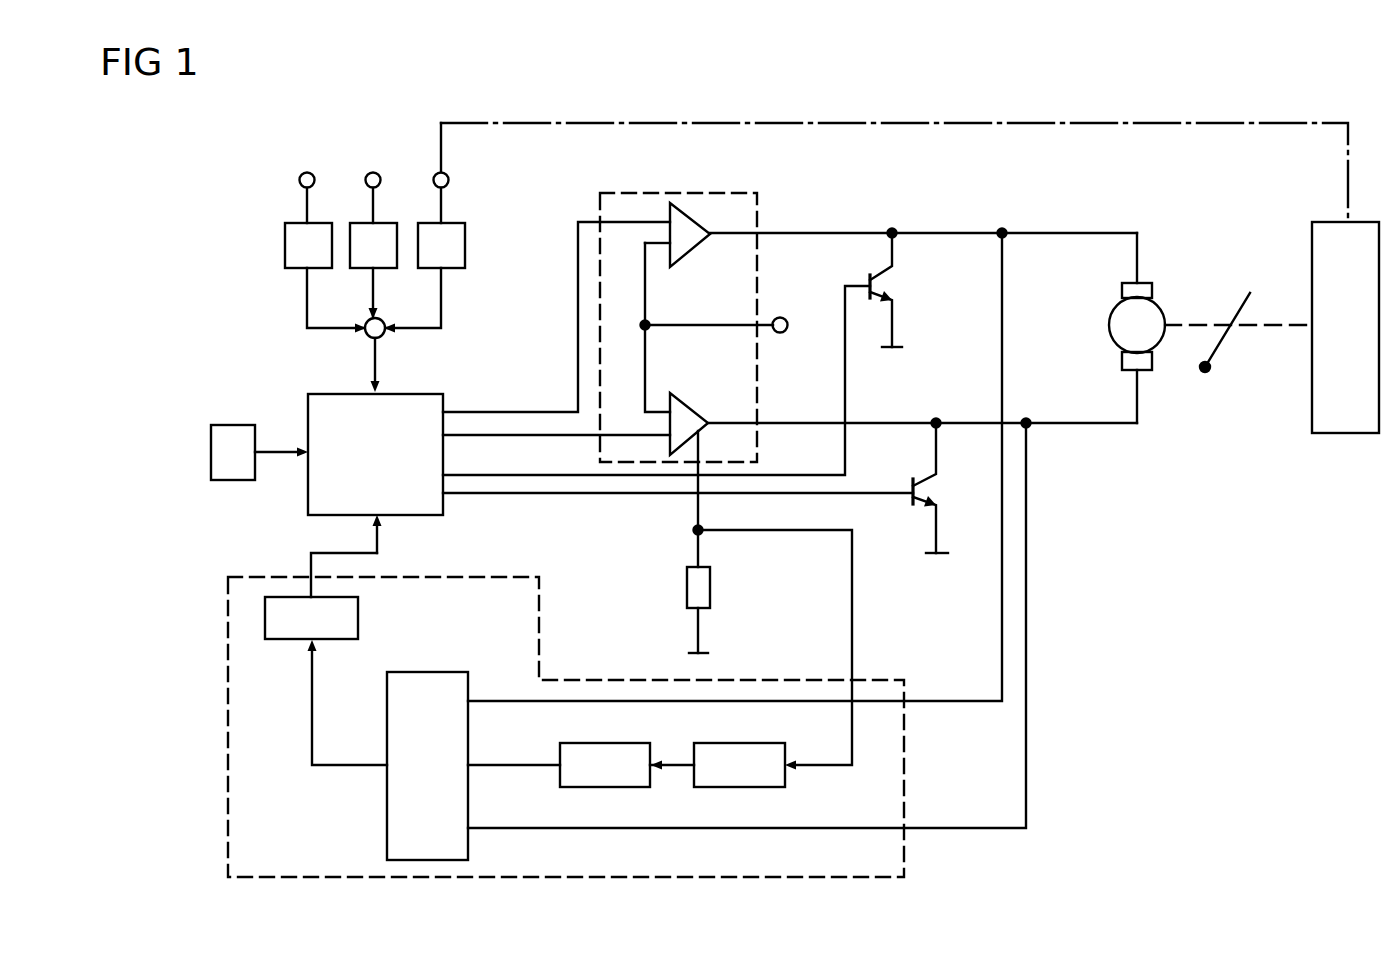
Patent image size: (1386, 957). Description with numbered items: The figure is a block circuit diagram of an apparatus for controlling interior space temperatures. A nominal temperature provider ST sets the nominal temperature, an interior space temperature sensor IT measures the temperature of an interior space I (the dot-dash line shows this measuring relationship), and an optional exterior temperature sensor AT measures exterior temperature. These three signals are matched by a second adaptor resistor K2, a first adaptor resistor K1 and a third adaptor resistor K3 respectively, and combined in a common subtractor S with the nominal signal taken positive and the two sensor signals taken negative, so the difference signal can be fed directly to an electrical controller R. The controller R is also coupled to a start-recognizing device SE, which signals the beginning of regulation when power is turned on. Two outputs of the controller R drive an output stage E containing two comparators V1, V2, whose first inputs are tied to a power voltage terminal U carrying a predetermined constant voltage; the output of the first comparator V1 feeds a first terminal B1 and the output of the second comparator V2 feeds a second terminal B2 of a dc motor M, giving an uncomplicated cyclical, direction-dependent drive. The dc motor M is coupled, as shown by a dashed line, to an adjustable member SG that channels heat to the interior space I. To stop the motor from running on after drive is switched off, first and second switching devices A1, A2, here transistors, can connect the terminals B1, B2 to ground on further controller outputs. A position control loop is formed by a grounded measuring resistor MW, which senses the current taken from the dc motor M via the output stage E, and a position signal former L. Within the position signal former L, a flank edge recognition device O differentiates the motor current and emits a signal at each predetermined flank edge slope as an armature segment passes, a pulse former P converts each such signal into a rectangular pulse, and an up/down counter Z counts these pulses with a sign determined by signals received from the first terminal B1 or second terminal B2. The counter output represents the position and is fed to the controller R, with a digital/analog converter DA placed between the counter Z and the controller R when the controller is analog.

The nominal temperature provider ST is at (295, 182).
The exterior temperature sensor AT is at (367, 182).
The interior space temperature sensor IT is at (891, 173).
The first adaptor resistor K1 is at (424, 278).
The second adaptor resistor K2 is at (325, 278).
The third adaptor resistor K3 is at (373, 271).
The subtractor S is at (374, 337).
The controller R is at (610, 409).
The start-recognizing device SE is at (259, 452).
The output stage E is at (757, 222).
The first comparator V1 is at (891, 240).
The second comparator V2 is at (891, 405).
The power voltage terminal U is at (729, 327).
The first switching device A1 is at (902, 288).
The second switching device A2 is at (946, 486).
The first terminal B1 is at (746, 449).
The second terminal B2 is at (758, 608).
The dc motor M is at (1137, 328).
The adjustable member SG is at (1238, 337).
The interior space I is at (1345, 327).
The measuring resistor MW is at (769, 648).
The position signal former L is at (905, 849).
The digital/analog converter DA is at (311, 618).
The counter Z is at (388, 750).
The pulse former P is at (581, 765).
The flank edge recognition device O is at (739, 765).